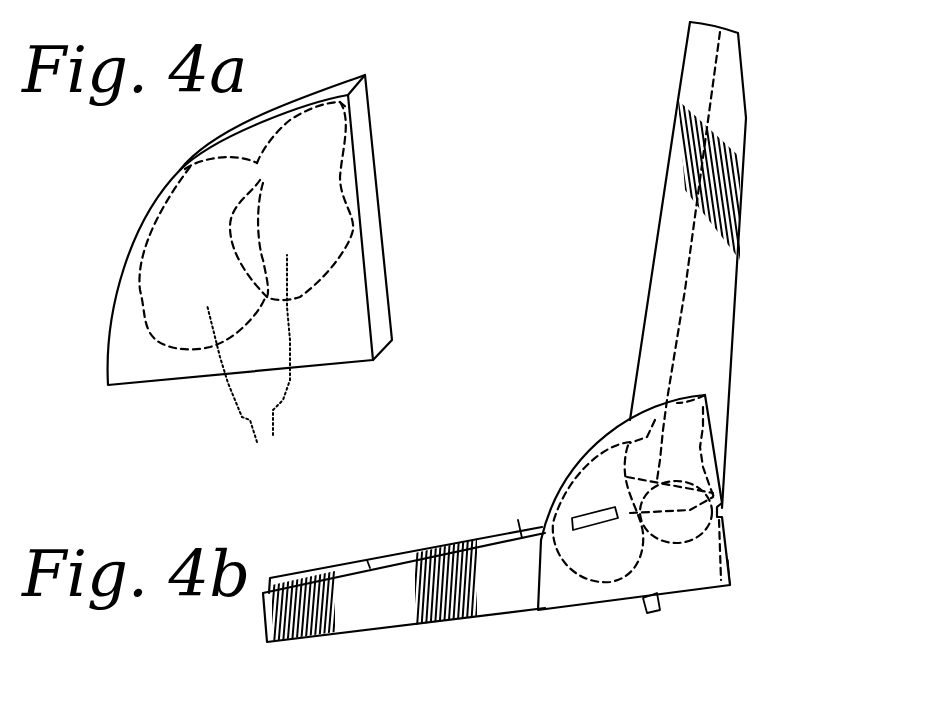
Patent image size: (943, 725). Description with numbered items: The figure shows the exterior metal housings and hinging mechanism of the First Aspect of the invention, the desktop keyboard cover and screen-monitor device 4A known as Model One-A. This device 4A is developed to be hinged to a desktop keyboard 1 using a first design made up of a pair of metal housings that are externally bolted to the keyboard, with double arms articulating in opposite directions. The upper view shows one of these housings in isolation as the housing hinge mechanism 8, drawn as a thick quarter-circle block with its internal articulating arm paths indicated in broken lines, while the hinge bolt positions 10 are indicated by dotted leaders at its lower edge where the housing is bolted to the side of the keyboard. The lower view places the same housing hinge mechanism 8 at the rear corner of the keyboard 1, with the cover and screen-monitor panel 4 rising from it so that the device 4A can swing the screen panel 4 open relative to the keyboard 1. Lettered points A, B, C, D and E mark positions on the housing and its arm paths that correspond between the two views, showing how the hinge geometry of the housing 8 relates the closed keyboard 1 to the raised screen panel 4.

In FIG. 4B, the desktop keyboard 1 is at (383, 614).
In FIG. 4B, the keyboard cover and screen-monitor device 4 is at (714, 336).
In FIG. 4B, the desktop keyboard cover and screen-monitor device (Model 1A) 4A is at (605, 432).
In FIG. 4A, the housing hinge mechanism 8 is at (373, 157).
In FIG. 4B, the housing hinge mechanism 8 is at (727, 555).
In FIG. 4A, the hinge bolt positions 10 is at (248, 365).
In FIG. 4A, the region A is at (350, 103).
In FIG. 4B, the region A is at (705, 397).
In FIG. 4A, the region B is at (320, 253).
In FIG. 4B, the region B is at (723, 483).
In FIG. 4A, the region C is at (257, 180).
In FIG. 4B, the region C is at (643, 460).
In FIG. 4A, the region D is at (155, 312).
In FIG. 4B, the region D is at (537, 528).
In FIG. 4B, the region E is at (722, 513).